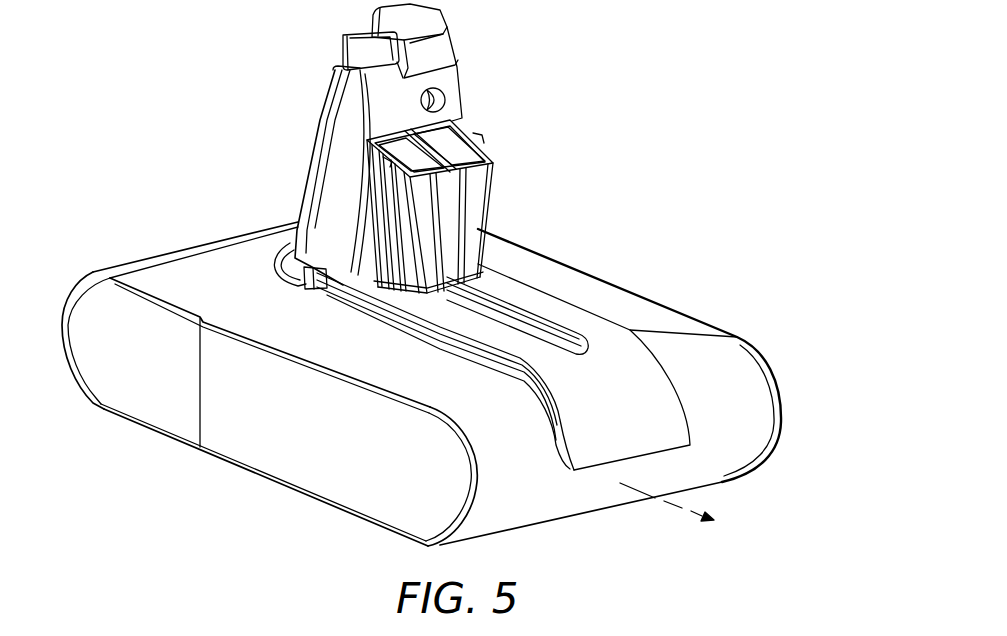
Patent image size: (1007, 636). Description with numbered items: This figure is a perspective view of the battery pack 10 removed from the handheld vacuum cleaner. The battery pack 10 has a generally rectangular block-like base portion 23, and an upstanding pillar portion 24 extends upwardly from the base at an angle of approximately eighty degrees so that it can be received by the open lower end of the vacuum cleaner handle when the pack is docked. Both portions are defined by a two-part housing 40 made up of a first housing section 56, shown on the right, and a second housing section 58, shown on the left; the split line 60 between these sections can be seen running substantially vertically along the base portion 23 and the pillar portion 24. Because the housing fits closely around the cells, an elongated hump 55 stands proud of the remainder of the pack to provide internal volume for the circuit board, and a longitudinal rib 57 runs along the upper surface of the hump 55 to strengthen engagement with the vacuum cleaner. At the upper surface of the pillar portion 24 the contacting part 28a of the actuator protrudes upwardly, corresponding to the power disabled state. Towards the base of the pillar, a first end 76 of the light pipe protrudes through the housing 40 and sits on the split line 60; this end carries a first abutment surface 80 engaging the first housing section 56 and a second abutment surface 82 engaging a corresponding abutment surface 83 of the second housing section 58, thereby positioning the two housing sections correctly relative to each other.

The battery pack 10 is at (452, 280).
The base portion 23 is at (452, 389).
The pillar portion 24 is at (359, 173).
The contacting part 28a is at (372, 55).
The two-part housing 40 is at (215, 455).
The hump 55 is at (550, 300).
The first housing section 56 is at (372, 515).
The longitudinal rib 57 is at (592, 354).
The second housing section 58 is at (125, 417).
The split line 60 is at (202, 368).
The first end of light pipe 76 is at (310, 290).
The first abutment surface 80 is at (322, 290).
The second abutment surface 82 is at (284, 262).
The abutment surface of second housing section 83 is at (296, 282).